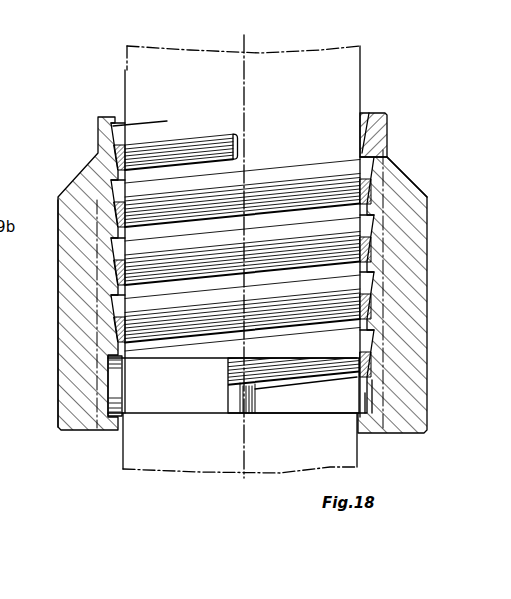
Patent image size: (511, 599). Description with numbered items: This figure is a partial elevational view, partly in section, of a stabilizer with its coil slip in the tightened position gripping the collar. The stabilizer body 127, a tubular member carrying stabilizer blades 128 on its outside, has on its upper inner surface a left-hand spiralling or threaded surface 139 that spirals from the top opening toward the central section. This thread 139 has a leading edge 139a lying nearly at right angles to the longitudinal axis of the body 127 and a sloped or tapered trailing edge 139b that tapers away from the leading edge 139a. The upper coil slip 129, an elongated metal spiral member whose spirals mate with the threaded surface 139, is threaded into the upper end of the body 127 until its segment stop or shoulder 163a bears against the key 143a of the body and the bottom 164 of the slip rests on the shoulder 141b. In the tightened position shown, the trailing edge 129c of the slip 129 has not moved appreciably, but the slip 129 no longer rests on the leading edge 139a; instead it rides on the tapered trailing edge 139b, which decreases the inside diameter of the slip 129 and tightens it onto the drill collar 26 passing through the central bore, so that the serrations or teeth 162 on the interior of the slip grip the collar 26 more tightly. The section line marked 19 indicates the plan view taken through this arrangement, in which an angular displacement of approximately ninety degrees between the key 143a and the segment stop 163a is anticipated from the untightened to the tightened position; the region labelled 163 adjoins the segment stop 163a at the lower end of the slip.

The drill collar 26 is at (362, 72).
The stabilizer body 127 is at (72, 262).
The stabilizer blades 128 is at (58, 304).
The upper coil slip 129 is at (167, 140).
The trailing edge of slip 129c is at (240, 143).
The left-hand spiralling or threaded surface 139 is at (423, 212).
The leading edge 139a is at (387, 130).
The sloped or tapered trailing edge 139b is at (383, 173).
The shoulder 141b is at (173, 418).
The key 143a is at (120, 403).
The serrations or teeth 162 is at (298, 182).
The ring nut 163 is at (257, 403).
The segment stop or shoulder 163a is at (235, 415).
The bottom of slip 164 is at (248, 410).
The section line 19- 19 is at (33, 432).